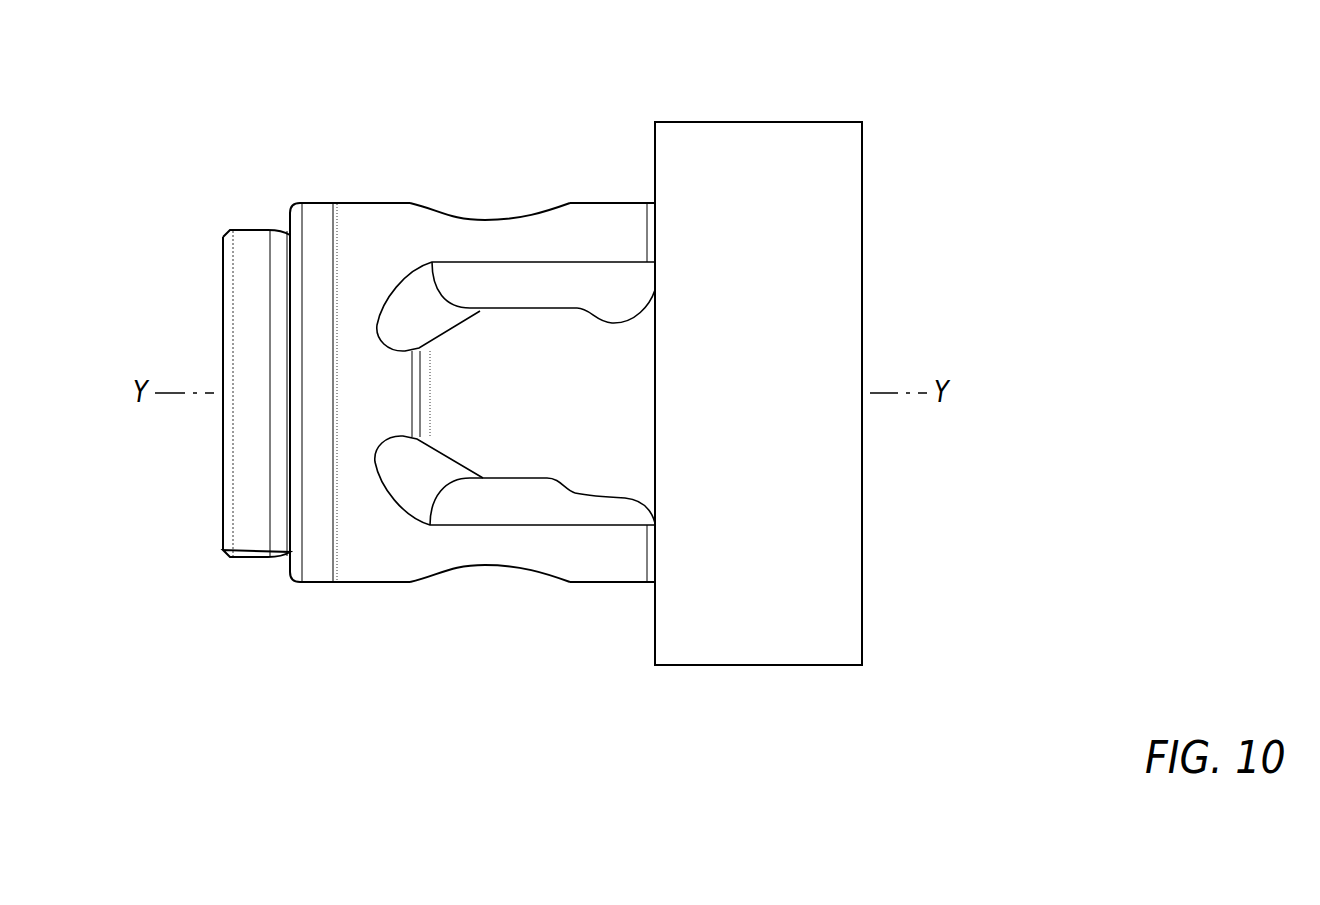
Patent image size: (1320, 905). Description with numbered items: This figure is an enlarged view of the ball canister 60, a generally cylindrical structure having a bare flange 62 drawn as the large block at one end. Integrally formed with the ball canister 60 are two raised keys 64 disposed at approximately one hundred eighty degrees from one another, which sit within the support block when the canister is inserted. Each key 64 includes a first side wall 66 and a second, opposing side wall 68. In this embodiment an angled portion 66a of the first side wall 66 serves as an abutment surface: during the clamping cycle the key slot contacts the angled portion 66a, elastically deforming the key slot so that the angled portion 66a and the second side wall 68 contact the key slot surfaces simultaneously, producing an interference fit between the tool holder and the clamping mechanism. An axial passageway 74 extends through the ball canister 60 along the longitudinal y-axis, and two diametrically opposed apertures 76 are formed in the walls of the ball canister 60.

The ball canister 60 is at (262, 118).
The bare flange 62 is at (653, 142).
The raised key 64 is at (620, 505).
The first side wall 66 is at (506, 480).
The angled portion 66a is at (591, 497).
The second side wall 68 is at (537, 308).
The axial passageway 74 is at (218, 258).
The aperture 76 is at (463, 218).